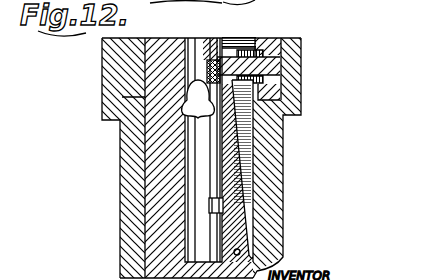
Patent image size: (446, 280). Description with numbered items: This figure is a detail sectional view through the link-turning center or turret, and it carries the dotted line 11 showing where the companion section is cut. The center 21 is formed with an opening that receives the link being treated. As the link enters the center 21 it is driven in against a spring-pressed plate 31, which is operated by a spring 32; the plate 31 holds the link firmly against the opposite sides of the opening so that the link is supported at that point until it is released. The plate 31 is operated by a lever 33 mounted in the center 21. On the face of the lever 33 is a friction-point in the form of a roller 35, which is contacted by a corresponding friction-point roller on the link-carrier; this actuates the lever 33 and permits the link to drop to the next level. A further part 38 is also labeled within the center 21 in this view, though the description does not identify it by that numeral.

The dotted line 11- 11 is at (76, 46).
The center 21 is at (153, 157).
The spring-pressed plate 31 is at (208, 58).
The spring 32 is at (285, 121).
The lever 33 is at (235, 172).
The roller 35 is at (209, 206).
The needle head 38 is at (198, 99).